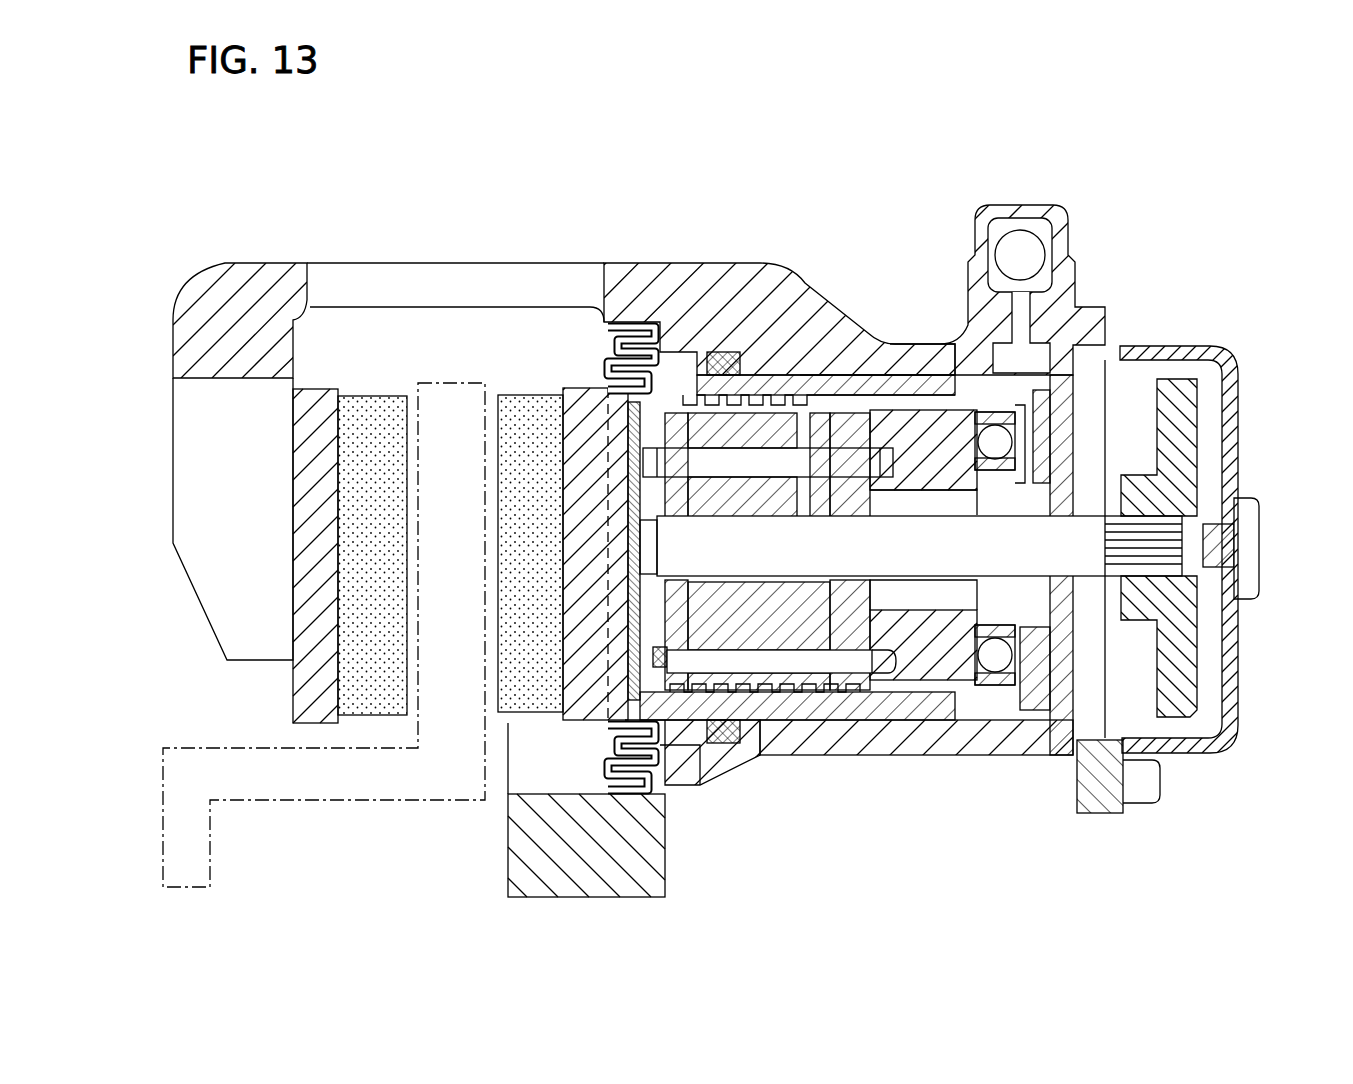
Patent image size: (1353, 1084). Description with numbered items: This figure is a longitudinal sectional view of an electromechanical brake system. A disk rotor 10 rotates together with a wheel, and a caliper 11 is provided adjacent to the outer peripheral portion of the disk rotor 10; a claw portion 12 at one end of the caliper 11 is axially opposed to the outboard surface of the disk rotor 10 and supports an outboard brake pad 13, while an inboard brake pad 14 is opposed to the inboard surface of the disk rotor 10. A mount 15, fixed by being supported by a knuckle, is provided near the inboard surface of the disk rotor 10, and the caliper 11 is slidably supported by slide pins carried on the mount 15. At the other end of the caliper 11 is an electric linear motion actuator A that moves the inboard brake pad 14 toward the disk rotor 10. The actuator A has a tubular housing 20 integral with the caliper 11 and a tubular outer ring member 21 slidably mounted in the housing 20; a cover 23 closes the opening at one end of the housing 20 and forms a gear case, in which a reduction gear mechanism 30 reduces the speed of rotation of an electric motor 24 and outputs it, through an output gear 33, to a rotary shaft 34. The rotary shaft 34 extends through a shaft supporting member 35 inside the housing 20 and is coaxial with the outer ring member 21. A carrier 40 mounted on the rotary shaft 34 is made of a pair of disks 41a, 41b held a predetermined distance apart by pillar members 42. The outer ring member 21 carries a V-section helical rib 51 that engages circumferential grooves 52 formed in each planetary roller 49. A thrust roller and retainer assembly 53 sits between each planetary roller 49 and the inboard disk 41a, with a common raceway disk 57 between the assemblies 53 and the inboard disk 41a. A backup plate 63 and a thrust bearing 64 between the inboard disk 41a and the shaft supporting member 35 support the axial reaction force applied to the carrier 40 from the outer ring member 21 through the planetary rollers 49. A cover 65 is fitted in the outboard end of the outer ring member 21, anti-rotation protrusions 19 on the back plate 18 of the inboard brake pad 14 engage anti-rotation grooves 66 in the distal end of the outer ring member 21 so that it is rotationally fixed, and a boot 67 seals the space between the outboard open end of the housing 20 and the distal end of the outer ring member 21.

The disk rotor 10 is at (437, 392).
The caliper 11 is at (637, 262).
The claw portion 12 is at (172, 405).
The outboard brake pad 13 is at (372, 412).
The inboard brake pad 14 is at (522, 412).
The mount 15 is at (585, 880).
The back plate 18 is at (583, 420).
The anti-rotation protrusions 19 is at (620, 640).
The housing 20 is at (878, 353).
The outer ring member 21 is at (810, 377).
The cover 23 is at (1240, 372).
The electric motor 24 is at (1098, 805).
The reduction gear mechanism 30 is at (1203, 420).
The output gear 33 is at (1199, 462).
The rotary shaft 34 is at (913, 567).
The shaft supporting member 35 is at (1068, 432).
The carrier 40 is at (855, 692).
The inboard disk 41a is at (835, 626).
The disk 41b is at (700, 617).
The pillar members 42 is at (770, 690).
The planetary roller 49 is at (757, 390).
The helical rib 51 is at (718, 390).
The circumferential grooves 52 is at (748, 517).
The thrust roller and retainer assembly 53 is at (820, 519).
The common raceway disk 57 is at (828, 590).
The backup plate 63 is at (908, 692).
The thrust bearing 64 is at (998, 660).
The cover 65 is at (628, 617).
The anti-rotation grooves 66 is at (607, 667).
The boot 67 is at (632, 772).
The electric linear motion actuator A is at (928, 340).